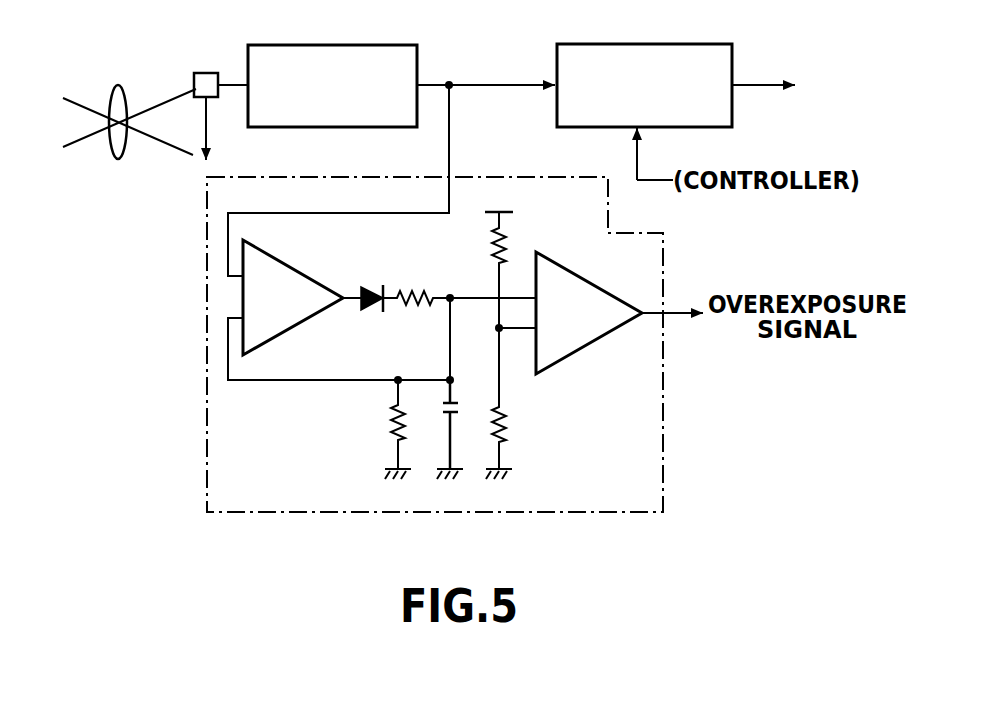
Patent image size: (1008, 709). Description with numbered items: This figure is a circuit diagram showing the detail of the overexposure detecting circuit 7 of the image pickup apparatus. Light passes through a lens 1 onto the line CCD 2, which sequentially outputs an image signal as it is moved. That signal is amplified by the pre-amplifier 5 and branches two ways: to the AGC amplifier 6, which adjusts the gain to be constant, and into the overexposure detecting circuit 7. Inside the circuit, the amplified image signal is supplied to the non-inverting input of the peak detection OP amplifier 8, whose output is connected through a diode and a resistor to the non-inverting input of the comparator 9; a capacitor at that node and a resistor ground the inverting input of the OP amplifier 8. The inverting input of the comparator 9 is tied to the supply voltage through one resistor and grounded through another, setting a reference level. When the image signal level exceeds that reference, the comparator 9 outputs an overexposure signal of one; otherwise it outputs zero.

The lens 1 is at (121, 84).
The line CCD 2 is at (212, 73).
The pre-amplifier 5 is at (385, 45).
The AGC amplifier 6 is at (655, 44).
The overexposure detecting circuit 7 is at (653, 493).
The peak detection operational amplifier 8 is at (298, 267).
The comparator 9 is at (595, 285).